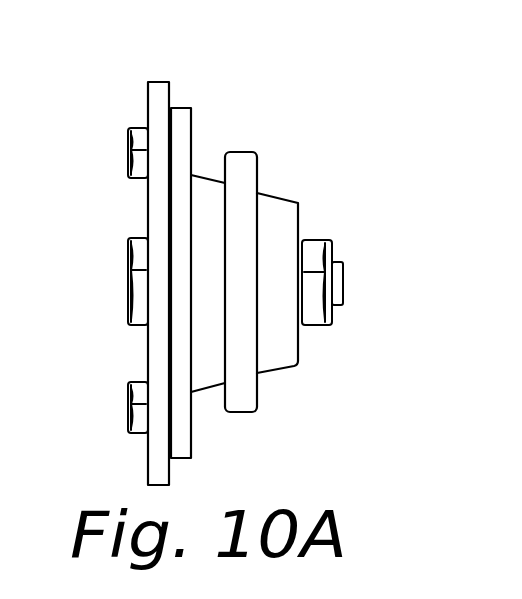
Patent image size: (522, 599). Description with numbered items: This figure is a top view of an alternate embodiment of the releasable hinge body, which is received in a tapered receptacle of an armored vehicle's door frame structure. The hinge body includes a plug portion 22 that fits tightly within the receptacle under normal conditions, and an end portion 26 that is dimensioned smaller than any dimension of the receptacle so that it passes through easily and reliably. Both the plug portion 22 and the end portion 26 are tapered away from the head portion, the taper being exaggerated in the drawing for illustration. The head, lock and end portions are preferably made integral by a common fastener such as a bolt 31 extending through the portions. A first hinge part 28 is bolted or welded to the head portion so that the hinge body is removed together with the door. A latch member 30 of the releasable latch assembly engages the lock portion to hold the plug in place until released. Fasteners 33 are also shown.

The plug portion 22 is at (208, 177).
The end portion 26 is at (282, 195).
The first hinge part 28 is at (158, 82).
The latch member 30 is at (240, 152).
The bolt 31 is at (345, 277).
The nuts 33 is at (128, 150).